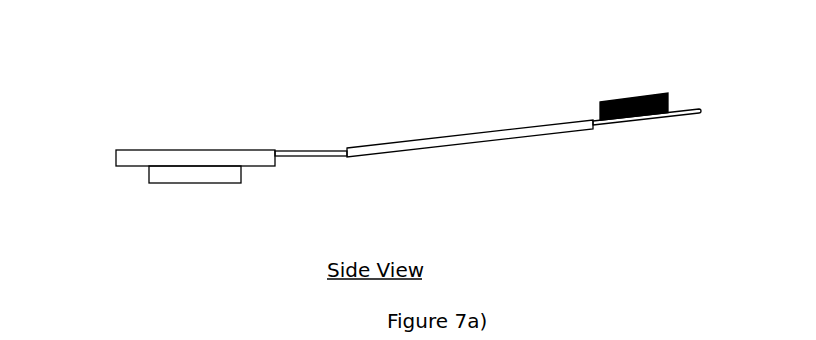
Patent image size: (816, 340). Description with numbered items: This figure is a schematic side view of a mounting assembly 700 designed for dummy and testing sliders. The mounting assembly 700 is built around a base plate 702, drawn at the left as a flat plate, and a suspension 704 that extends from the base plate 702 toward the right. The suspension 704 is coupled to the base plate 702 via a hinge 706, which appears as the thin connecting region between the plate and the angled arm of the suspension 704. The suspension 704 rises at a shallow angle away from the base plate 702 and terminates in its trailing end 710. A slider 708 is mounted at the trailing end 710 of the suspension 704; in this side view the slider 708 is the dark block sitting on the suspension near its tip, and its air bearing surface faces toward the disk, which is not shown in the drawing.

The mounting assembly 700 is at (100, 215).
The base plate 702 is at (183, 142).
The suspension 704 is at (392, 130).
The hinge 706 is at (330, 173).
The slider 708 is at (627, 92).
The trailing end 710 is at (627, 123).